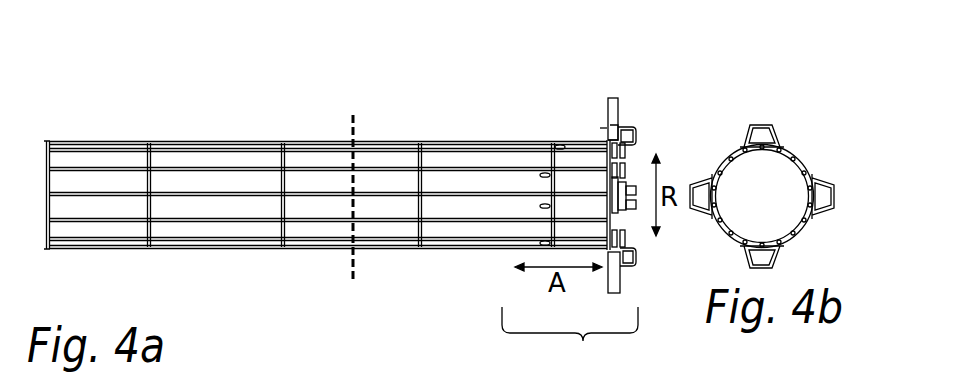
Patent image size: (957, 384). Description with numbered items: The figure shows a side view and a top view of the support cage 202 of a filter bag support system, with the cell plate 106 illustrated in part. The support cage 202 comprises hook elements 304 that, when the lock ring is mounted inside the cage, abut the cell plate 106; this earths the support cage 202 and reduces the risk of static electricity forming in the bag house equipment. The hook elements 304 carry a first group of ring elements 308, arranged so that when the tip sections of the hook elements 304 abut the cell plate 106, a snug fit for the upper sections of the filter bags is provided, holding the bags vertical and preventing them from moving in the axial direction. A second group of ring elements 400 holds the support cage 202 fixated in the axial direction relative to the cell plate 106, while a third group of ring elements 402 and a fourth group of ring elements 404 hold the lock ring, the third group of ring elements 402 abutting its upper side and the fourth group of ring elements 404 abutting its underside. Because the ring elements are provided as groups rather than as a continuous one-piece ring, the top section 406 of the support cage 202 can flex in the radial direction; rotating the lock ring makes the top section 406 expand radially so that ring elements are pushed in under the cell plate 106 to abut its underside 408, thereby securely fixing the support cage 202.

In FIG. 4A, the support cage 202 is at (285, 98).
In FIG. 4A, the cell plate 106 is at (600, 128).
In FIG. 4A, the hook elements 304 is at (633, 109).
In FIG. 4B, the hook elements 304 is at (763, 111).
In FIG. 4A, the first group of ring elements 308 is at (635, 128).
In FIG. 4A, the second group of ring elements 400 is at (612, 142).
In FIG. 4A, the third group of ring elements 402 is at (607, 175).
In FIG. 4A, the fourth group of ring elements 404 is at (617, 217).
In FIG. 4A, the top section 406 is at (570, 316).
In FIG. 4A, the underside of cell plate 408 is at (603, 123).